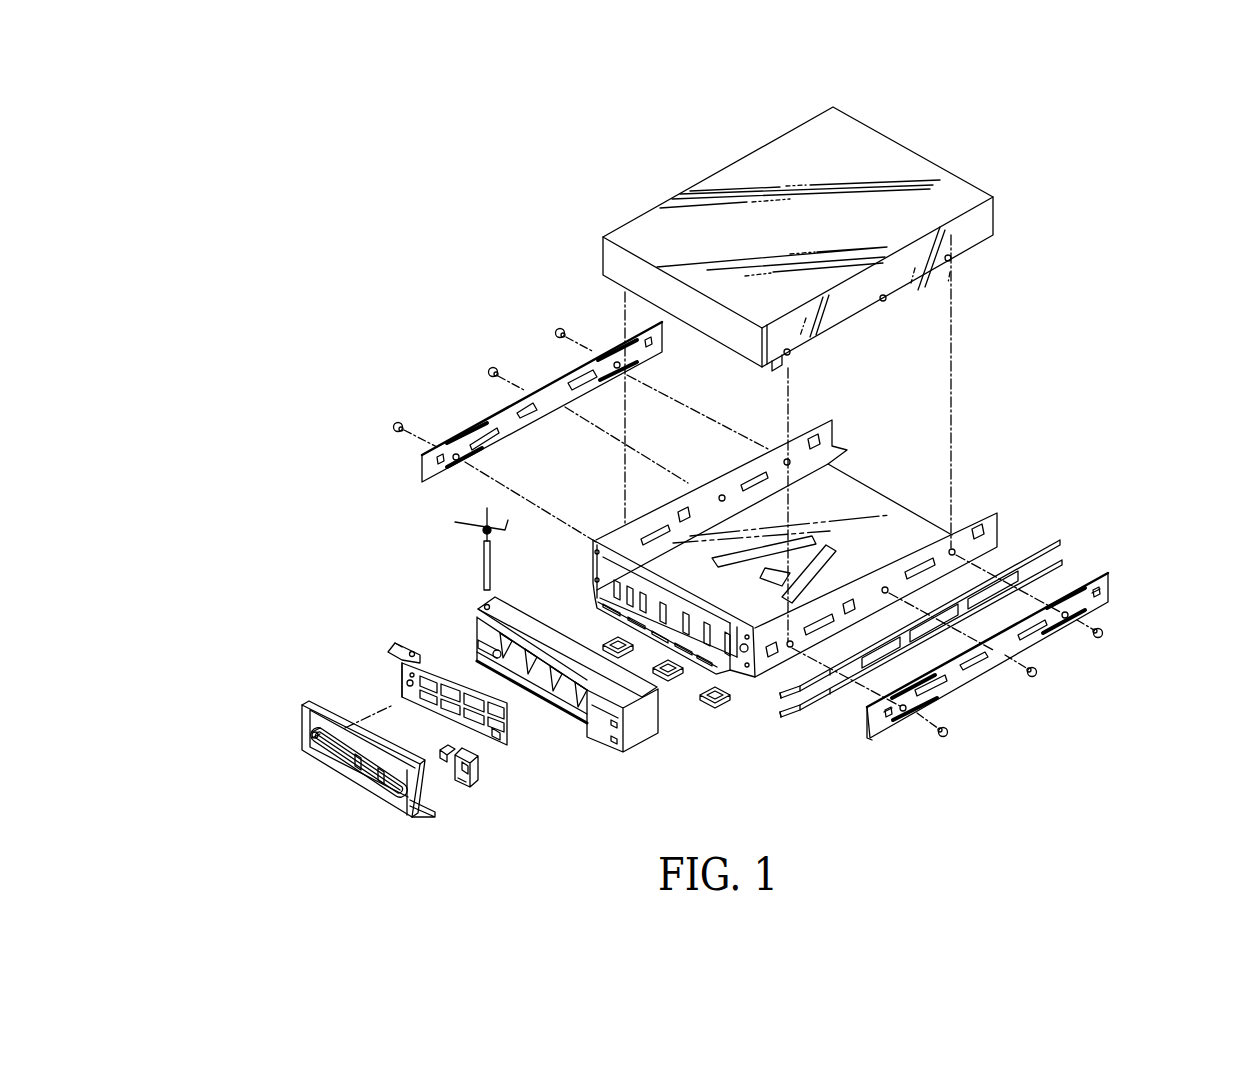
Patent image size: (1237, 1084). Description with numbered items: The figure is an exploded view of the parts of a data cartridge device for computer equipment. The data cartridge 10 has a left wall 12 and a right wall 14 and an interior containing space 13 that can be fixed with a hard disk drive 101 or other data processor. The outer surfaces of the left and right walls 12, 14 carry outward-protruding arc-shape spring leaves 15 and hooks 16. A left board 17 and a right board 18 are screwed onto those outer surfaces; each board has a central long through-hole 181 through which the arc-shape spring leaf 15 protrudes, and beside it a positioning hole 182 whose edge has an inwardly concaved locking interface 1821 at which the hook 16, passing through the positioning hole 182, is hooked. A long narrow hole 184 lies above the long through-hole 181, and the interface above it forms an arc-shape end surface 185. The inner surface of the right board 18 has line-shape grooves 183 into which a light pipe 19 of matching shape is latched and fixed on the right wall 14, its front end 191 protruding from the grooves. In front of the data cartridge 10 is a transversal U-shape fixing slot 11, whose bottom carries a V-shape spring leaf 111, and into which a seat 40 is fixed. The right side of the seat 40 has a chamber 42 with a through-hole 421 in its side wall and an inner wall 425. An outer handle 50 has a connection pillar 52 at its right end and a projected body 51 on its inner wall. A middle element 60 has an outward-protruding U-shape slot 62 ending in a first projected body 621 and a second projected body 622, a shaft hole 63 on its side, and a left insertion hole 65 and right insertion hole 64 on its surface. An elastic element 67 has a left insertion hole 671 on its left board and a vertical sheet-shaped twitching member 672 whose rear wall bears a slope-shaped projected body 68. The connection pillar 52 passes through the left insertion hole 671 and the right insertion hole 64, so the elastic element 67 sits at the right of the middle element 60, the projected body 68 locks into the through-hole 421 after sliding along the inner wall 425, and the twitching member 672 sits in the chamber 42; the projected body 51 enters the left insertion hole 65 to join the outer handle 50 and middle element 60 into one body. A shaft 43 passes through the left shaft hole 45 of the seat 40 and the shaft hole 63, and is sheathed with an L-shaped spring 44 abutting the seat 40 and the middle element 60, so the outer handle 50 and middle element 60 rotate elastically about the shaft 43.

The data cartridge 10 is at (735, 452).
The hard disk drive 101 is at (882, 162).
The U-shape fixing slot 11 is at (603, 602).
The V-shape spring leaf 111 is at (618, 645).
The left wall 12 is at (705, 503).
The containing space 13 is at (845, 475).
The right wall 14 is at (963, 528).
The arc-shape spring leaf 15 is at (650, 522).
The hook 16 is at (672, 520).
The left board 17 is at (527, 382).
The right board 18 is at (1020, 650).
The long through-hole 181 is at (612, 363).
The positioning hole 182 is at (648, 342).
The locking interface 1821 is at (1097, 603).
The line-shape grooves 183 is at (867, 722).
The long narrow hole 184 is at (622, 350).
The arc-shape end surface 185 is at (612, 348).
The light pipe 19 is at (903, 670).
The front end of light pipe 191 is at (782, 716).
The seat 40 is at (545, 683).
The chamber 42 is at (607, 749).
The through-hole 421 is at (605, 727).
The inner wall of chamber 425 is at (590, 707).
The shaft 43 is at (485, 566).
The spring 44 is at (478, 523).
The left shaft hole 45 is at (475, 646).
The outer handle 50 is at (315, 783).
The projected body 51 is at (300, 743).
The connection pillar 52 is at (440, 773).
The middle element 60 is at (415, 659).
The U-shape slot 62 is at (345, 628).
The first projected body 621 is at (398, 651).
The second projected body 622 is at (405, 645).
The shaft hole 63 is at (412, 658).
The right insertion hole 64 is at (496, 734).
The left insertion hole 65 is at (403, 681).
The elastic element 67 is at (465, 781).
The left insertion hole 671 is at (447, 755).
The twitching member 672 is at (460, 787).
The projected body 68 is at (473, 775).